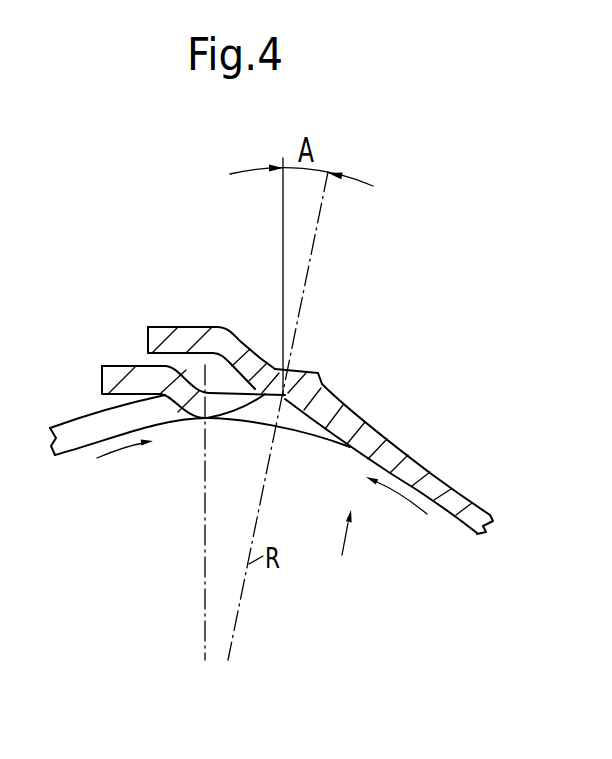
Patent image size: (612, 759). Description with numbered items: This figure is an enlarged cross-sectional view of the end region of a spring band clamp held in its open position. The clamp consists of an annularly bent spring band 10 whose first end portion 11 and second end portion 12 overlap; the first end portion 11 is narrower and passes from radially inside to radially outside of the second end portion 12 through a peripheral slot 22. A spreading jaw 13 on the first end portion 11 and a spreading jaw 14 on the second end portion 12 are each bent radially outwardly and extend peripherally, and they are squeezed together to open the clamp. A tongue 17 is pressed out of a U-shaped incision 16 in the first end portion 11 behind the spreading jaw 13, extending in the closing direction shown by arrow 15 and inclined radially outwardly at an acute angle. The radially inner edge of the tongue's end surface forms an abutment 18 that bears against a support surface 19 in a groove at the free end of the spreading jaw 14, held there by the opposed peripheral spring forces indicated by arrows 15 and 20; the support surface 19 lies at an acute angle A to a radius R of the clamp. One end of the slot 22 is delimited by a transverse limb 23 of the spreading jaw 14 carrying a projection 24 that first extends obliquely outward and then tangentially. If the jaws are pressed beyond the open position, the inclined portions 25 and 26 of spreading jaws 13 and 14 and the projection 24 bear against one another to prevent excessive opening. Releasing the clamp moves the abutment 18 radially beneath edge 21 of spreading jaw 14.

The spring band 10 is at (345, 550).
The first end portion 11 is at (389, 442).
The second end portion 12 is at (190, 397).
The spreading jaw 13 is at (193, 379).
The spreading jaw 14 is at (309, 409).
The closing direction arrow 15 is at (405, 497).
The U-shaped incision 16 is at (262, 413).
The tongue 17 is at (327, 400).
The abutment 18 is at (250, 400).
The support surface 19 is at (279, 372).
The arrow 20 is at (119, 454).
The edge 21 is at (284, 400).
The peripheral slot 22 is at (93, 425).
The transverse limb 23 is at (281, 392).
The projection 24 is at (213, 328).
The inclined portion 25 is at (180, 387).
The inclined portion 26 is at (195, 419).